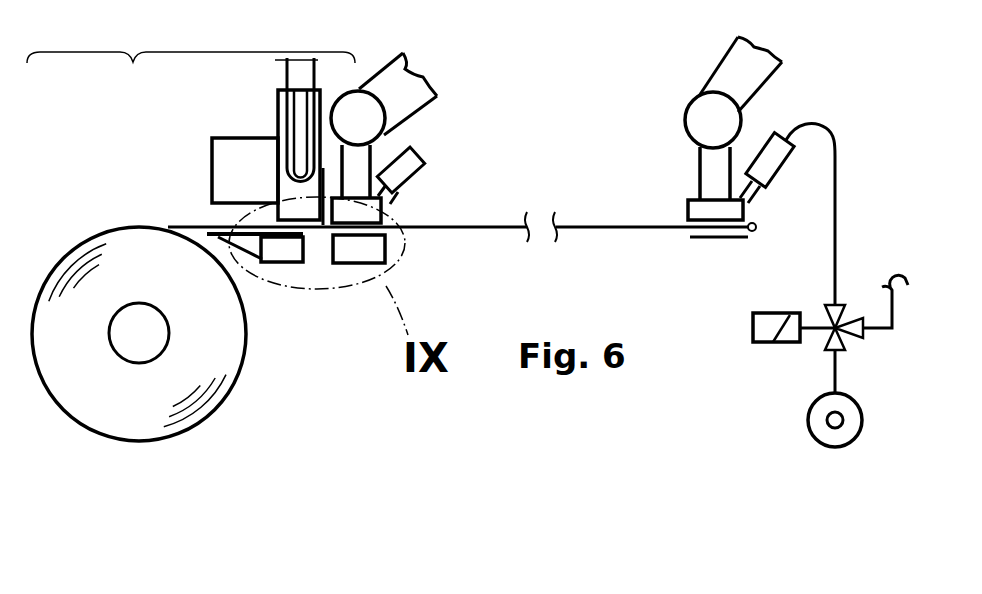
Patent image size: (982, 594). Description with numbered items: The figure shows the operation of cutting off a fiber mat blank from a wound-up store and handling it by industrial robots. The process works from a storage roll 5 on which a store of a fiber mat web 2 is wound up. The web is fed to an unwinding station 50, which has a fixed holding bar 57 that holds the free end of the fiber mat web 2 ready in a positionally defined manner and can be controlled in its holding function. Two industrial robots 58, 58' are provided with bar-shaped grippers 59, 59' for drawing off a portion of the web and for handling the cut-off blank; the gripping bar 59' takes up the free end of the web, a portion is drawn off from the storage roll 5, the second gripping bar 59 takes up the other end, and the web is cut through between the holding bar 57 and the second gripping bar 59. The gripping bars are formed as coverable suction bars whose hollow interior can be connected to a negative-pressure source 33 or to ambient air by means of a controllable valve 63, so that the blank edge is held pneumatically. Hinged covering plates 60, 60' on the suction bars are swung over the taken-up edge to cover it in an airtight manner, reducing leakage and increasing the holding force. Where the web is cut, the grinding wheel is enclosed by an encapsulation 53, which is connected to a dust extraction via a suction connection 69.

The fiber mat web 2 is at (200, 227).
The storage roll 5 is at (118, 423).
The unwinding station 50 is at (191, 77).
The encapsulation 53 is at (278, 160).
The holding bar 57 is at (283, 253).
The industrial robot 58 is at (413, 125).
The gripping bar 59 is at (410, 201).
The covering plate 60 is at (390, 171).
The suction connection 69 is at (290, 78).
The industrial robot 58' is at (711, 118).
The gripping bar 59' is at (687, 187).
The covering plate 60' is at (767, 220).
The controllable valve 63 is at (827, 343).
The negative-pressure source 33 is at (822, 434).